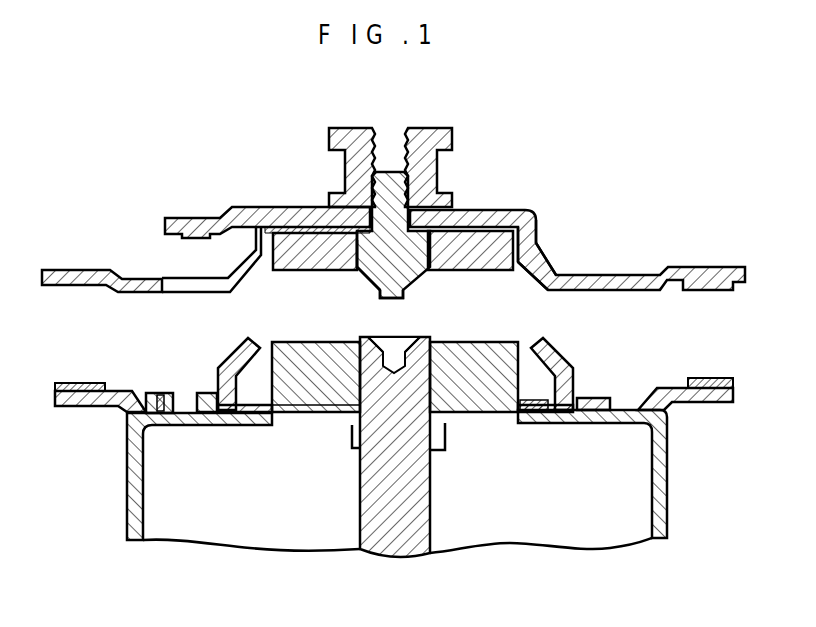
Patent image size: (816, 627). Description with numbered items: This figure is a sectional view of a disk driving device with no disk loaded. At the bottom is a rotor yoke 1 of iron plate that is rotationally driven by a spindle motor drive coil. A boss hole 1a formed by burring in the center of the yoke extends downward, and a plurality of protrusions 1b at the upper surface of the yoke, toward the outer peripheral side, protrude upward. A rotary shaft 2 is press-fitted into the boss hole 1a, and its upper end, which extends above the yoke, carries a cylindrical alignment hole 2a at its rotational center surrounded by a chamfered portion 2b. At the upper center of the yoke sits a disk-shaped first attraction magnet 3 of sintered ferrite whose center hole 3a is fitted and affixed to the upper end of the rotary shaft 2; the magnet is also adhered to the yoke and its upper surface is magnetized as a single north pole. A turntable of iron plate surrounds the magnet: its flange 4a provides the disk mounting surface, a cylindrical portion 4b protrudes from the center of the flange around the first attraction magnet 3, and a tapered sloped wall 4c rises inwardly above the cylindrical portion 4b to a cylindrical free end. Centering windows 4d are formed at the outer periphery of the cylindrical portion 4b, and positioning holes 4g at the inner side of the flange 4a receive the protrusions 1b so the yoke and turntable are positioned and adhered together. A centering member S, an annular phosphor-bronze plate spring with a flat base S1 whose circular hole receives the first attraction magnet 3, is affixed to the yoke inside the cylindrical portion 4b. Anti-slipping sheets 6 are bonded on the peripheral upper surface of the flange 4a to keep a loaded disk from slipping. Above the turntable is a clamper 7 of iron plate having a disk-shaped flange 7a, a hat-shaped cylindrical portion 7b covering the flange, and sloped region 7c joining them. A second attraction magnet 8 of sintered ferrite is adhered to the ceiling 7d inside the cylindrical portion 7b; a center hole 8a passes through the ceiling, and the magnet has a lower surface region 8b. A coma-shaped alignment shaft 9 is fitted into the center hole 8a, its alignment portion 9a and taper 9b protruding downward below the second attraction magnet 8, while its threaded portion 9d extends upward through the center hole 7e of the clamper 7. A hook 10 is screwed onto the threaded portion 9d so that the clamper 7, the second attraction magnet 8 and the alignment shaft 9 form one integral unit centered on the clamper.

The rotor yoke 1 is at (670, 502).
The boss hole 1a is at (436, 452).
The protrusions 1b is at (180, 432).
The rotary shaft 2 is at (394, 524).
The alignment hole 2a is at (406, 362).
The chamfered portion 2b is at (378, 344).
The first attraction magnet 3 is at (300, 402).
The center hole 3a is at (342, 414).
The flange 4a is at (106, 392).
The cylindrical portion 4b is at (218, 378).
The sloped wall 4c is at (556, 353).
The centering windows 4d is at (562, 388).
The positioning holes 4g is at (160, 396).
The anti-slipping sheets 6 is at (70, 384).
The clamper 7 is at (614, 272).
The flange 7a is at (148, 294).
The cylindrical portion 7b is at (540, 234).
The plate slope 7c is at (540, 284).
The ceiling 7d is at (462, 212).
The center hole 7e is at (380, 220).
The second attraction magnet 8 is at (498, 236).
The center hole 8a is at (356, 248).
The spacer right 8b is at (468, 274).
The alignment shaft 9 is at (397, 164).
The alignment portion 9a is at (385, 300).
The taper 9b is at (376, 284).
The threaded portion 9d is at (412, 186).
The hook 10 is at (430, 138).
The centering member S is at (236, 344).
The flat base S1 is at (230, 434).